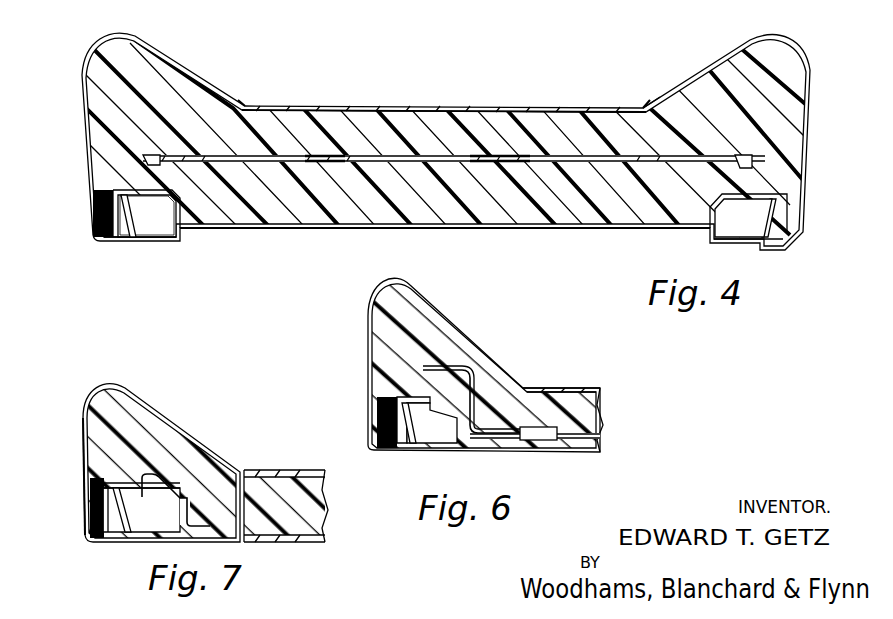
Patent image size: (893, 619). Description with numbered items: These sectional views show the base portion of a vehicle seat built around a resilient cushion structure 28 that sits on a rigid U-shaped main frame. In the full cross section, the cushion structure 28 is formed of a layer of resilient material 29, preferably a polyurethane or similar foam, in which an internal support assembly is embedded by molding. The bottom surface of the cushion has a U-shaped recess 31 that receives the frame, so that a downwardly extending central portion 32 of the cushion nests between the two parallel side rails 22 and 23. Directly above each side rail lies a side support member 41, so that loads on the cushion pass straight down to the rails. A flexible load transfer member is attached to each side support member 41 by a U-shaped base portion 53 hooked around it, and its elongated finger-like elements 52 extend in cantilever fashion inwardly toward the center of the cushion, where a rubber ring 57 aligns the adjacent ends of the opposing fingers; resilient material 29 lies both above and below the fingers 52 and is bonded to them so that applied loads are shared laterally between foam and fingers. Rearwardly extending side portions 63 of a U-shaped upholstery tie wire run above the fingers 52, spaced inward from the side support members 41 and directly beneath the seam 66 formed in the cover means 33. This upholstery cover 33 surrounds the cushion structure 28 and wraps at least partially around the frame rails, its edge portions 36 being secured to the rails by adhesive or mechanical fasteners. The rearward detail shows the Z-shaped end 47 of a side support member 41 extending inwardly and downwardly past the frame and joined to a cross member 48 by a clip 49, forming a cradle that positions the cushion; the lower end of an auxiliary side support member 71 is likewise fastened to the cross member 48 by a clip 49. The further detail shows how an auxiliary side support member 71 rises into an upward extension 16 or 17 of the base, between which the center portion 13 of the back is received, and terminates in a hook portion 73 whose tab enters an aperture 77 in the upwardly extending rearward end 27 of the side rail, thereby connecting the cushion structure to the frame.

In FIG. 7, the center portion 13 is at (303, 483).
In FIG. 7, the upward extension 16 is at (83, 450).
In FIG. 7, the upward extension 17 is at (150, 405).
In FIG. 4, the side rail 22 is at (183, 229).
In FIG. 4, the side rail 23 is at (710, 236).
In FIG. 7, the rearward end 27 is at (118, 525).
In FIG. 6, the rearward end 27 is at (410, 445).
In FIG. 4, the cushion structure 28 is at (417, 100).
In FIG. 4, the resilient material 29 is at (450, 130).
In FIG. 4, the U-shaped recess 31 is at (163, 243).
In FIG. 6, the U-shaped recess 31 is at (375, 408).
In FIG. 4, the central portion 32 is at (428, 220).
In FIG. 4, the cover means 33 is at (207, 70).
In FIG. 7, the cover means 33 is at (190, 415).
In FIG. 6, the cover means 33 is at (477, 333).
In FIG. 4, the edge portions 36 is at (137, 243).
In FIG. 4, the side support member 41 is at (160, 163).
In FIG. 6, the Z-shaped end 47 is at (480, 385).
In FIG. 6, the cross member 48 is at (568, 452).
In FIG. 6, the clip 49 is at (550, 442).
In FIG. 4, the finger-like elements 52 is at (333, 162).
In FIG. 4, the U-shaped base portion 53 is at (745, 160).
In FIG. 4, the rubber ring 57 is at (370, 132).
In FIG. 4, the side portions 63 is at (247, 153).
In FIG. 4, the seam 66 is at (643, 117).
In FIG. 6, the auxiliary side support member 71 is at (490, 440).
In FIG. 7, the hook portion 73 is at (183, 470).
In FIG. 7, the aperture 77 is at (118, 500).